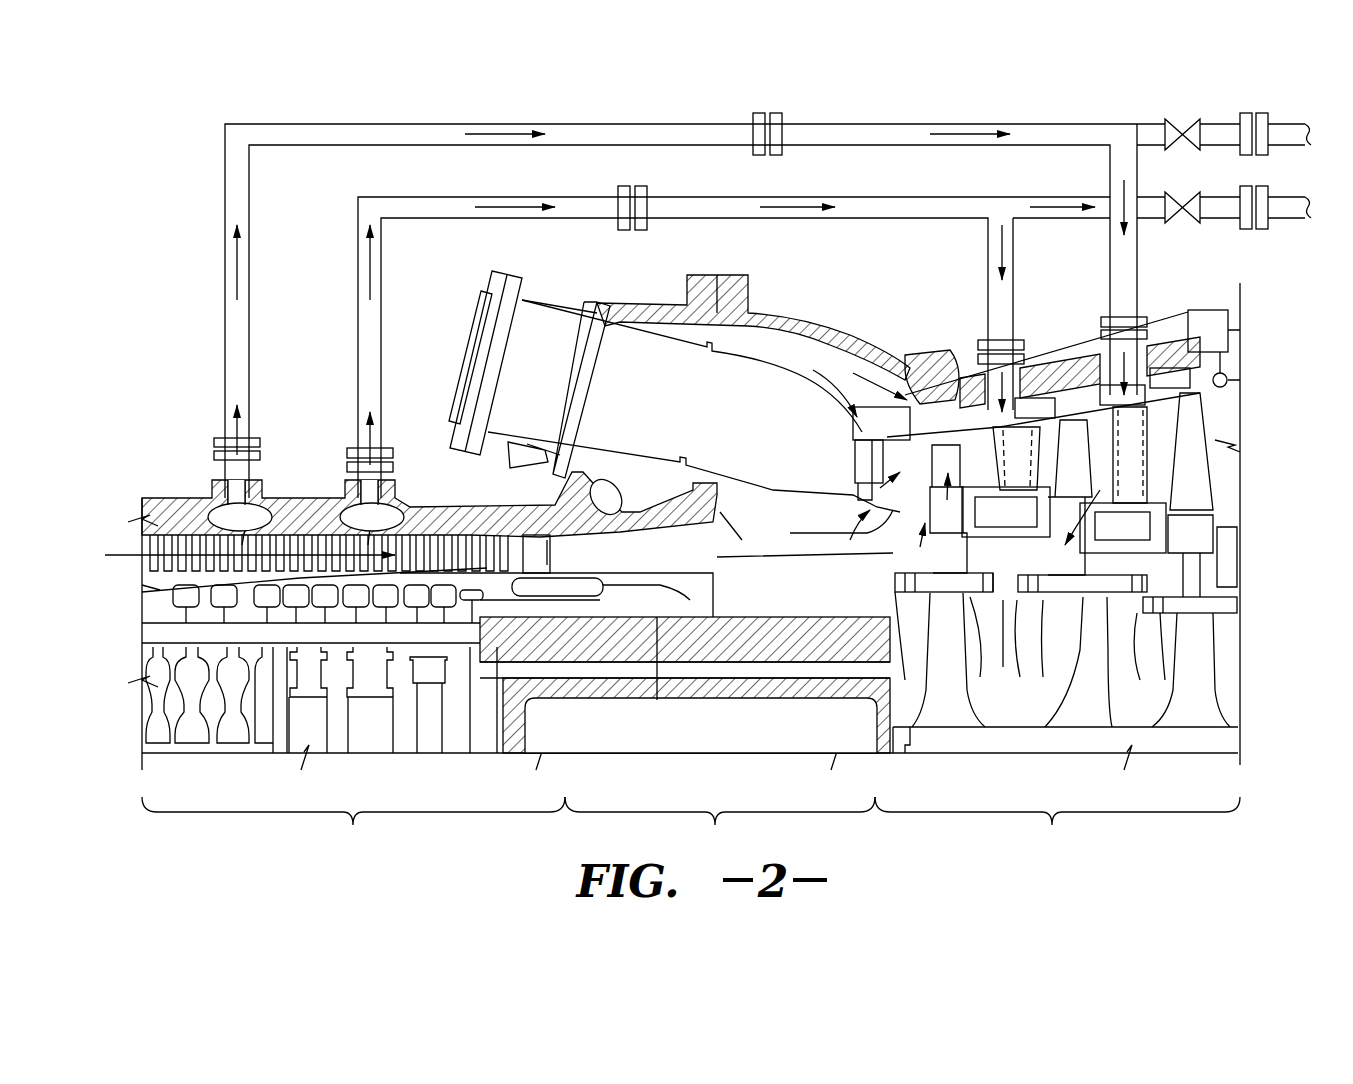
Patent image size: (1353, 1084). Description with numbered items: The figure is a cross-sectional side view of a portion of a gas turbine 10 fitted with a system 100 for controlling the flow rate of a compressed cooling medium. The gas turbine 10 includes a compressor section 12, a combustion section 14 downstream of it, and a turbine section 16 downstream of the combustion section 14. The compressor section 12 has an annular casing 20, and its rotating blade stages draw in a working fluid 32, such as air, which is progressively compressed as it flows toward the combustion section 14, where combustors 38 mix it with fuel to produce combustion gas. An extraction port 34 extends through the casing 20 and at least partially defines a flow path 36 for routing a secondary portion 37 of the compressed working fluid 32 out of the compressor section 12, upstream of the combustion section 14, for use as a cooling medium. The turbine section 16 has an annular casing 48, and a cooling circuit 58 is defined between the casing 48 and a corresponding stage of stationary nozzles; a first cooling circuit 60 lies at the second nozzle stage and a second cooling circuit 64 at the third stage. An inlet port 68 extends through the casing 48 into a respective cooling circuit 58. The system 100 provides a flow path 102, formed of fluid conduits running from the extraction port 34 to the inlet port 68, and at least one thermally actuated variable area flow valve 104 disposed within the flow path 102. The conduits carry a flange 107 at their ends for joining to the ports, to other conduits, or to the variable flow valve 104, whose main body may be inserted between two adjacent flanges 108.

The gas turbine 10 is at (148, 405).
The compressor section 12 is at (690, 698).
The combustion section 14 is at (679, 568).
The turbine section 16 is at (1045, 627).
The casing 20 is at (175, 498).
The working fluid 32 is at (126, 553).
The extraction port 34 is at (258, 463).
The flow path 36 is at (210, 512).
The secondary portion of the compressed working fluid 37 is at (497, 128).
The combustor 38 is at (553, 300).
The casing 48 is at (1190, 330).
The cooling circuit 58 is at (1063, 504).
The first cooling circuit 60 is at (975, 365).
The second cooling circuit 64 is at (1150, 350).
The inlet port 68 is at (1020, 362).
The system 100 is at (204, 172).
The flow path 102 is at (240, 347).
The thermally actuated variable area flow valve 104 is at (775, 112).
The flange 107 is at (760, 112).
The flange 108 is at (622, 185).